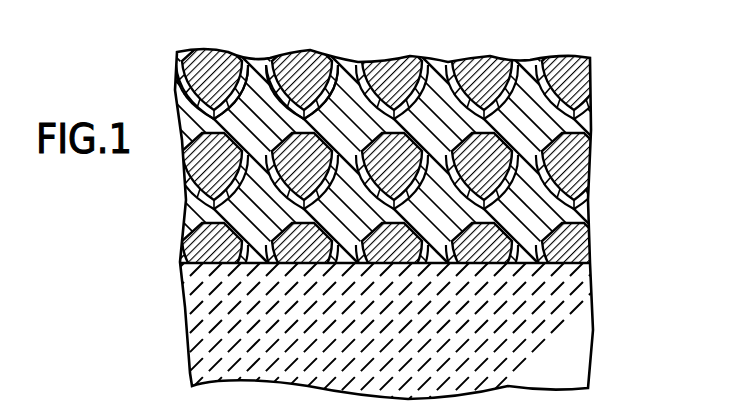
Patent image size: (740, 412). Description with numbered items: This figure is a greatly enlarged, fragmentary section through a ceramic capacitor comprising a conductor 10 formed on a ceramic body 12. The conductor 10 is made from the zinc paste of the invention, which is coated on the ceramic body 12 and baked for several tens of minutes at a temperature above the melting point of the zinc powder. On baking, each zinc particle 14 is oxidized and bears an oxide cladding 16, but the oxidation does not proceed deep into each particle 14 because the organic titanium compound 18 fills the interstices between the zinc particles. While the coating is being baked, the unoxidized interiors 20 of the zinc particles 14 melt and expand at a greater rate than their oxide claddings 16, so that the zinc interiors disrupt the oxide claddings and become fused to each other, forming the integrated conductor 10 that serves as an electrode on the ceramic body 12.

The conductor 10 is at (370, 217).
The ceramic body 12 is at (590, 293).
The zinc particle 14 is at (257, 92).
The oxide cladding 16 is at (392, 170).
The organic titanium compound 18 is at (392, 80).
The unoxidized interiors 20 is at (392, 260).